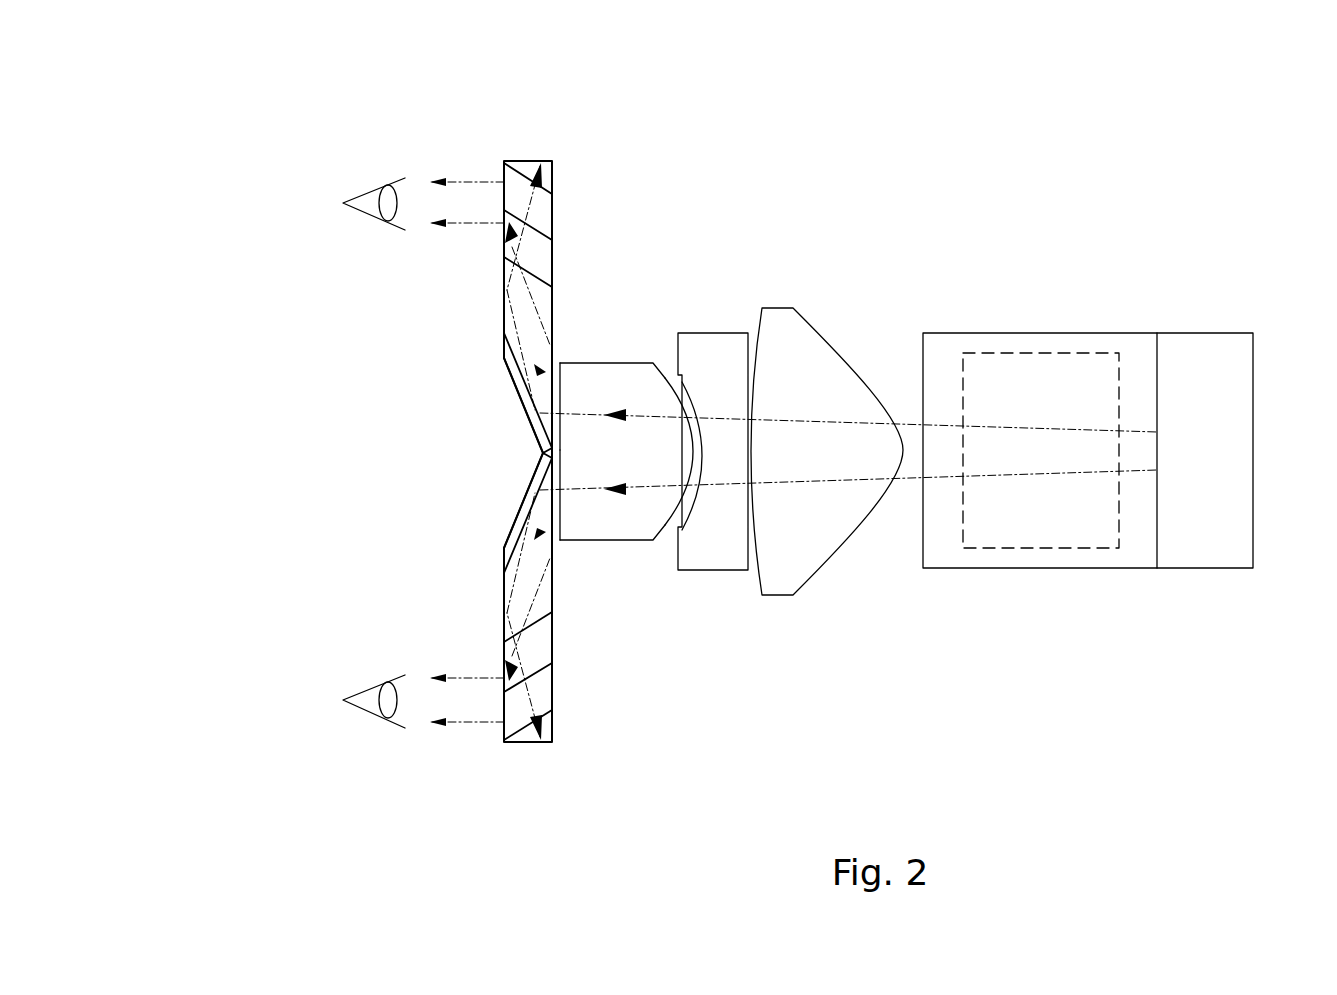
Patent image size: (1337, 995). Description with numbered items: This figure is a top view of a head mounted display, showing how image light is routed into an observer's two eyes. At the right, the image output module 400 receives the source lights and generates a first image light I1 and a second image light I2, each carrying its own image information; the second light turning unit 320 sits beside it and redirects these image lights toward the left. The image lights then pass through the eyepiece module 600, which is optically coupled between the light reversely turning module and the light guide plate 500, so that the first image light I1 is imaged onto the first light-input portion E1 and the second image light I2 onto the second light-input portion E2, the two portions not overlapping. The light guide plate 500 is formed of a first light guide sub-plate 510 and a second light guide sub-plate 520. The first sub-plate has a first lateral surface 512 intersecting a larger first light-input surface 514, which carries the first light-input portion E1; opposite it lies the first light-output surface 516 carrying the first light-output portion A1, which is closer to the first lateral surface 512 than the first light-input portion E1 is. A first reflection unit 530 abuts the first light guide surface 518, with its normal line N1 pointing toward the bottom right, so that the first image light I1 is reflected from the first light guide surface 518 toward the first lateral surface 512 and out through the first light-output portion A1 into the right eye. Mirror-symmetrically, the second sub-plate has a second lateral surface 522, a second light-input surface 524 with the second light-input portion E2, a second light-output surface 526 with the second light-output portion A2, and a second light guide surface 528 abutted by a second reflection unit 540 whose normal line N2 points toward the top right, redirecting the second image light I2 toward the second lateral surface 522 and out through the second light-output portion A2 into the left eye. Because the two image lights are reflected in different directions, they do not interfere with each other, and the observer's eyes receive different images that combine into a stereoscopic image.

The light guide plate 500 is at (237, 18).
The first light guide sub-plate 510 is at (508, 652).
The second light guide sub-plate 520 is at (510, 240).
The first lateral surface 512 is at (530, 744).
The first light-input surface 514 is at (553, 650).
The first light-output surface 516 is at (504, 613).
The first light guide surface 518 is at (508, 560).
The second lateral surface 522 is at (530, 160).
The second light-input surface 524 is at (553, 256).
The second light-output surface 526 is at (504, 285).
The second light guide surface 528 is at (508, 340).
The first reflection unit 530 is at (523, 505).
The second reflection unit 540 is at (523, 395).
The eyepiece module 600 is at (725, 333).
The image output module 400 is at (1050, 353).
The second light turning unit 320 is at (1140, 333).
The first light-output portion A1 is at (503, 703).
The second light-output portion A2 is at (503, 202).
The first image light I1 is at (553, 692).
The second image light I2 is at (553, 197).
The first light-input portion E1 is at (561, 514).
The second light-input portion E2 is at (561, 388).
The normal line N1 is at (540, 530).
The normal line N2 is at (540, 375).